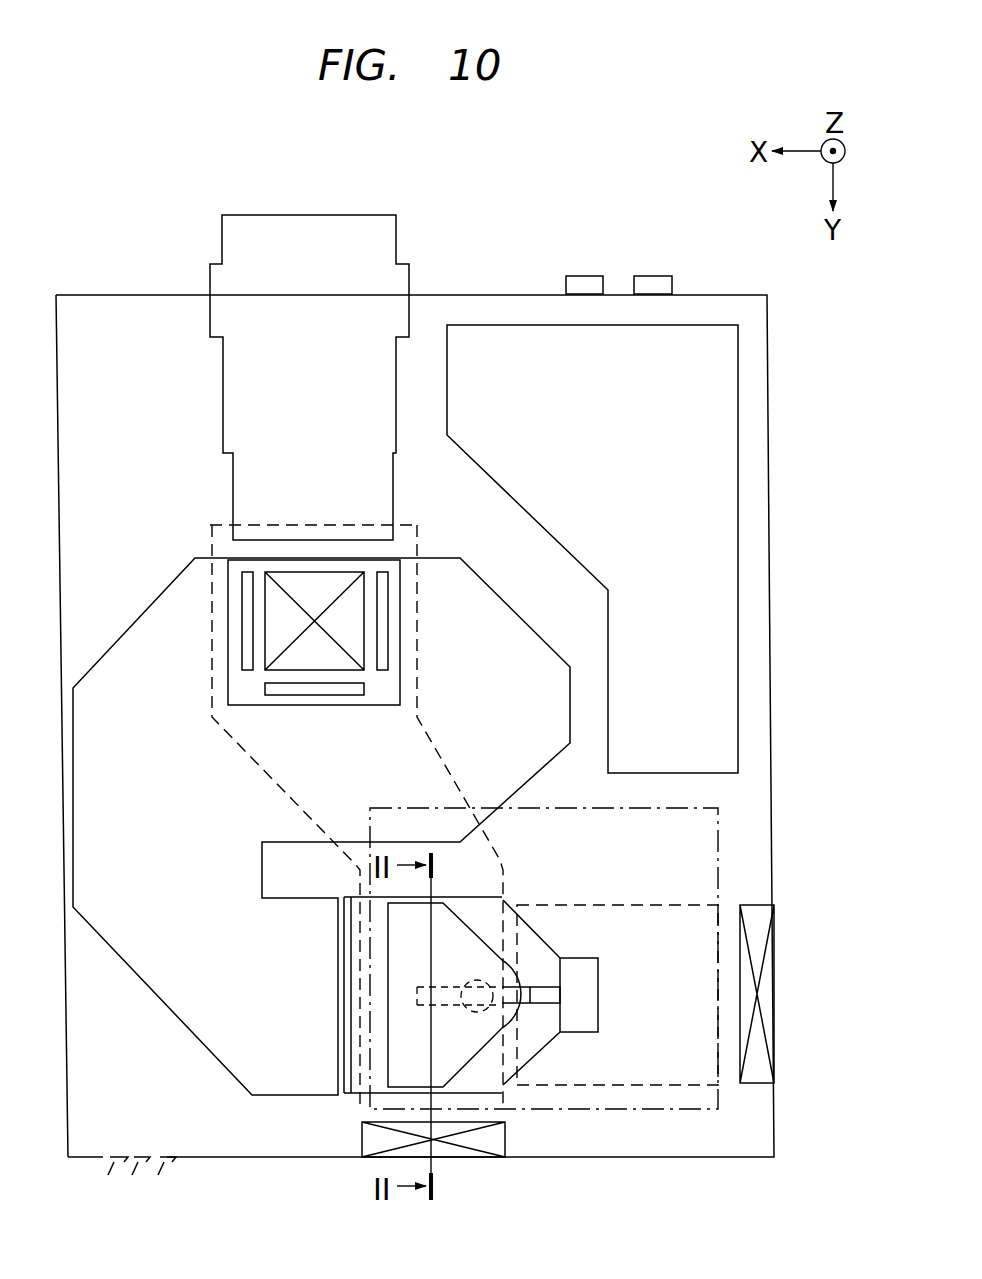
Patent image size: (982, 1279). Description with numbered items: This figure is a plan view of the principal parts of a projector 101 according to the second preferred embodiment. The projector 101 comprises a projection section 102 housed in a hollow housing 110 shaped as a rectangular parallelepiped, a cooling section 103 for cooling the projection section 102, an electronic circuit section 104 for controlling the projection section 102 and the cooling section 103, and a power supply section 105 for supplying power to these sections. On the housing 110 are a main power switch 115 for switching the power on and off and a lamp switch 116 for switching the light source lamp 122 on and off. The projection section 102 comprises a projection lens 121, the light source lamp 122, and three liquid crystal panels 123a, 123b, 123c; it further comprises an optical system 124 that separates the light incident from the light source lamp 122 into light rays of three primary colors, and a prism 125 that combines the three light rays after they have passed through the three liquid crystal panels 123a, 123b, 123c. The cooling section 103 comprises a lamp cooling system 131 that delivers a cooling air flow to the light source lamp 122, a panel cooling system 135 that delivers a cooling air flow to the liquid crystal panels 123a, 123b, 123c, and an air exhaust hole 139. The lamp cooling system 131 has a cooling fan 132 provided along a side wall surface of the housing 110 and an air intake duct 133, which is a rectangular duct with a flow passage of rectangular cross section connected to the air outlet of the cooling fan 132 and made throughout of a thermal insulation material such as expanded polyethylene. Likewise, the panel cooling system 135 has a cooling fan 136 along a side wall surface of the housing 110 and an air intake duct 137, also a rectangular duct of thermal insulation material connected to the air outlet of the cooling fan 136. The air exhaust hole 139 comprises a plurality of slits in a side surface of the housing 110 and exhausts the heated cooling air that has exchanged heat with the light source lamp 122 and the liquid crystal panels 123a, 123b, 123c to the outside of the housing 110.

The projector 101 is at (166, 160).
The projection section 102 is at (175, 432).
The cooling section 103 is at (790, 998).
The electronic circuit section 104 is at (717, 837).
The power supply section 105 is at (722, 545).
The housing 110 is at (130, 294).
The main power switch 115 is at (655, 276).
The lamp switch 116 is at (583, 276).
The projection lens 121 is at (308, 213).
The light source lamp 122 is at (543, 930).
The liquid crystal panel 123a is at (245, 650).
The liquid crystal panel 123b is at (316, 695).
The liquid crystal panel 123c is at (384, 650).
The optical system 124 is at (171, 1008).
The prism 125 is at (302, 575).
The lamp cooling system 131 is at (702, 1120).
The cooling fan 132 is at (758, 1087).
The air intake duct 133 is at (610, 905).
The panel cooling system 135 is at (343, 1115).
The cooling fan 136 is at (505, 1140).
The air intake duct 137 is at (258, 758).
The air exhaust hole 139 is at (122, 1178).